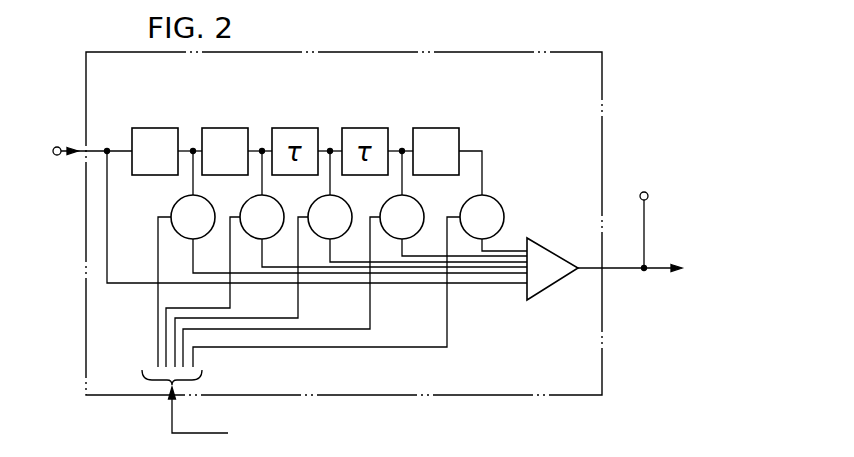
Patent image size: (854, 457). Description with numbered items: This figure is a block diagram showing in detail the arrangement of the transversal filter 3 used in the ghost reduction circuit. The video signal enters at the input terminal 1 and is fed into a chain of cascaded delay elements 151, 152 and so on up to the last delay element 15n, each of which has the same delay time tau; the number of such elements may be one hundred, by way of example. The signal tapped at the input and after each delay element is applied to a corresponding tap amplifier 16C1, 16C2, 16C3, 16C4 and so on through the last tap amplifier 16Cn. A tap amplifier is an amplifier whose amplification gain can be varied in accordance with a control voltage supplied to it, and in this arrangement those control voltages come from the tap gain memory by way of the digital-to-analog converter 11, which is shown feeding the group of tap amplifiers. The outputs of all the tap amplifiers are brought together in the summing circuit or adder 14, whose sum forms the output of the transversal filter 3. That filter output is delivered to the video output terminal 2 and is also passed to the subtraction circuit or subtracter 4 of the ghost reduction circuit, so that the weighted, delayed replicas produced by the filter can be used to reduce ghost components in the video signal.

The input terminal 1 is at (56, 146).
The output terminal 2 is at (645, 192).
The transversal filter 3 is at (602, 143).
The subtraction circuit 4 is at (686, 294).
The digital-to-analog (D/A) converter 11 is at (318, 408).
The summing circuit 14 is at (543, 247).
The delay element 151 is at (143, 128).
The delay element 152 is at (218, 128).
The delay element 15n is at (442, 128).
The tap amplifier 16C1 is at (342, 281).
The tap amplifier 16C2 is at (346, 281).
The tap amplifier 16C3 is at (351, 281).
The tap amplifier 16C4 is at (355, 281).
The tap amplifier 16Cn is at (360, 281).